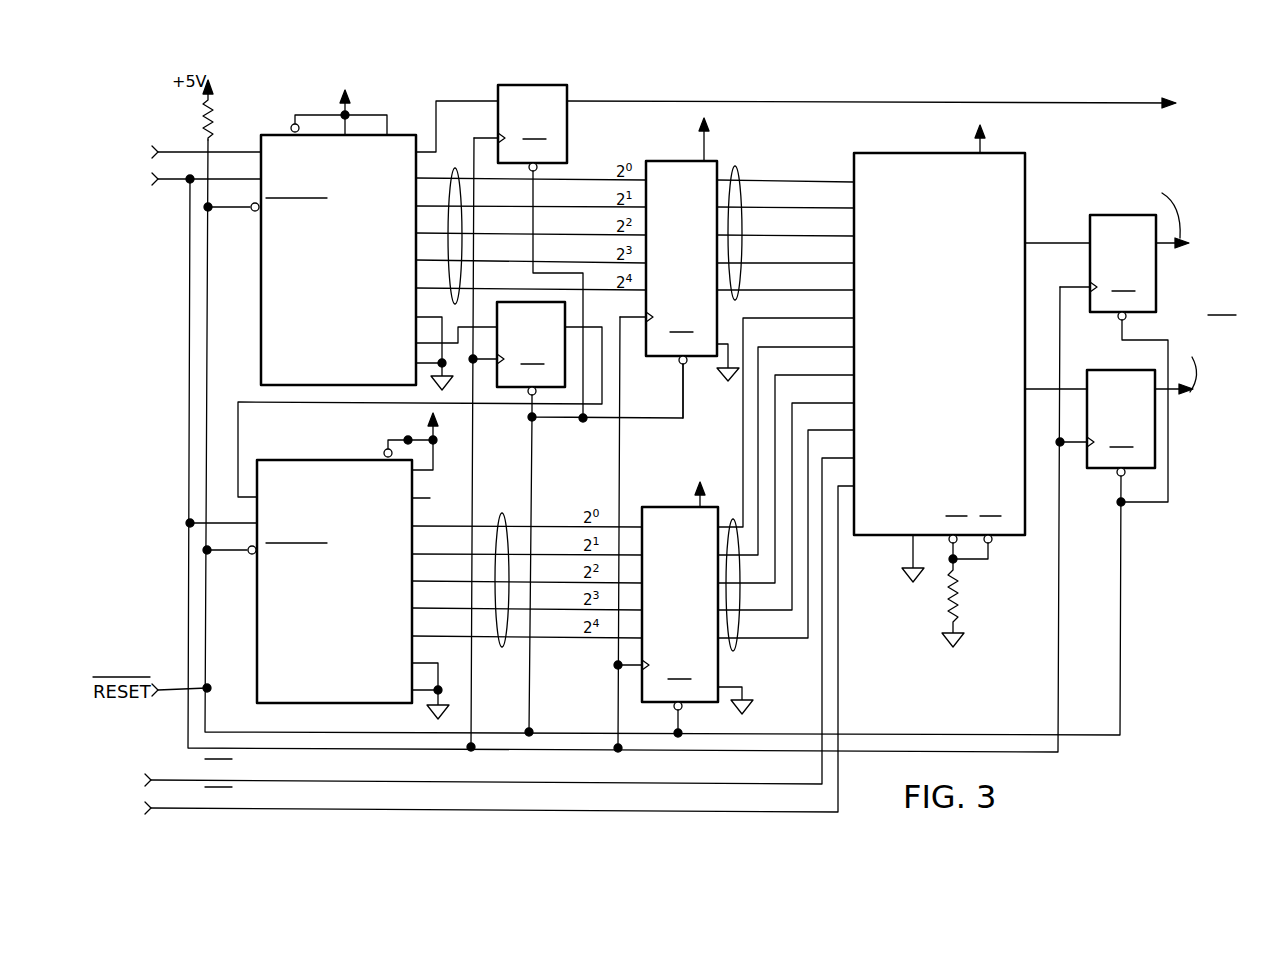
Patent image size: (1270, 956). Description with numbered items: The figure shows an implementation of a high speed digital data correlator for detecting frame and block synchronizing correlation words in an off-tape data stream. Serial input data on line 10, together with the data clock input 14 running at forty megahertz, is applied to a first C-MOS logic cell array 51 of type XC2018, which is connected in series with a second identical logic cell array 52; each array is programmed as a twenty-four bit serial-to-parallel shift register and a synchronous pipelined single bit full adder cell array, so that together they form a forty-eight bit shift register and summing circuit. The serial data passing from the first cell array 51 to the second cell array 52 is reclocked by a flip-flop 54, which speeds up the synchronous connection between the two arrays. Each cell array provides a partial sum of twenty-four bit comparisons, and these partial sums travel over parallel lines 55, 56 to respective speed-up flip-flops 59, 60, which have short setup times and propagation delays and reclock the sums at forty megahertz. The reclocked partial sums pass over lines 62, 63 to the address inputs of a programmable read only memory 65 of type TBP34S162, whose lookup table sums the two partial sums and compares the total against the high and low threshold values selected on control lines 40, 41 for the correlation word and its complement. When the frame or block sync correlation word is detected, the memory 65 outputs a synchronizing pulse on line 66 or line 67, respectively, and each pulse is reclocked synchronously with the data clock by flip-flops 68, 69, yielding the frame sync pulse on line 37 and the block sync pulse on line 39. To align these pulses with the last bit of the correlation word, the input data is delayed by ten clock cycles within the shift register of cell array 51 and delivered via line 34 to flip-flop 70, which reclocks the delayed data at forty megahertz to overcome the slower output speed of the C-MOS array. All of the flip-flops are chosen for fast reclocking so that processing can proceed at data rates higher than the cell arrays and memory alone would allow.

The input data line 10 is at (187, 148).
The data clock input 14 is at (175, 187).
The delayed data line 34 is at (480, 96).
The frame sync pulse line 37 is at (1162, 246).
The block sync pulse line 39 is at (1170, 397).
The CW threshold control line 40 is at (505, 780).
The CW-bar threshold control line 41 is at (498, 810).
The first logic cell array 51 is at (260, 139).
The second logic cell array 52 is at (347, 467).
The reclocking flip-flop 54 is at (555, 316).
The first parallel lines 55 is at (531, 225).
The second parallel lines 56 is at (527, 567).
The first speed-up flip-flop 59 is at (705, 346).
The second speed-up flip-flop 60 is at (660, 514).
The first partial sum lines 62 is at (700, 249).
The second partial sum lines 63 is at (785, 424).
The programmable read only memory 65 is at (947, 160).
The frame sync output line 66 is at (1038, 242).
The block sync output line 67 is at (1040, 388).
The frame sync flip-flop 68 is at (1118, 220).
The block sync flip-flop 69 is at (1118, 382).
The delayed data flip-flop 70 is at (558, 126).